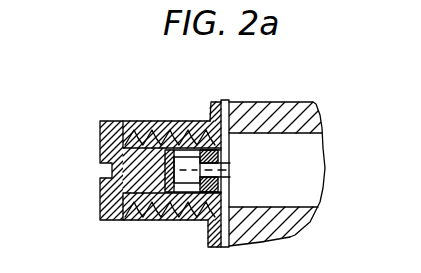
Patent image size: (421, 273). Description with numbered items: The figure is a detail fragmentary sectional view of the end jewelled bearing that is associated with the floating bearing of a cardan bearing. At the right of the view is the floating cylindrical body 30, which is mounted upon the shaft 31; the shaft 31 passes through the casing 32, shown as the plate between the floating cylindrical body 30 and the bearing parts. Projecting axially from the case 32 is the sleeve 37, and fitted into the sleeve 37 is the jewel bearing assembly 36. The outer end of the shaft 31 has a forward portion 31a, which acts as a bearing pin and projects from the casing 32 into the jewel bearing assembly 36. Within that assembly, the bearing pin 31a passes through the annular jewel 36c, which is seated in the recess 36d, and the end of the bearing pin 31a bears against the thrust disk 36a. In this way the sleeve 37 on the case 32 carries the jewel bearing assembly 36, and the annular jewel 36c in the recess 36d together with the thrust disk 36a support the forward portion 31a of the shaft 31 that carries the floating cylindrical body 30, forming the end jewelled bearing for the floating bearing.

The floating cylindrical body 30 is at (270, 102).
The shaft 31 is at (314, 166).
The forward portion (bearing pin) 31a is at (230, 167).
The casing 32 is at (222, 101).
The jewel bearing assembly 36 is at (148, 200).
The thrust disk 36a is at (167, 156).
The annular jewel 36c is at (215, 157).
The recess 36d is at (186, 193).
The sleeve 37 is at (143, 121).